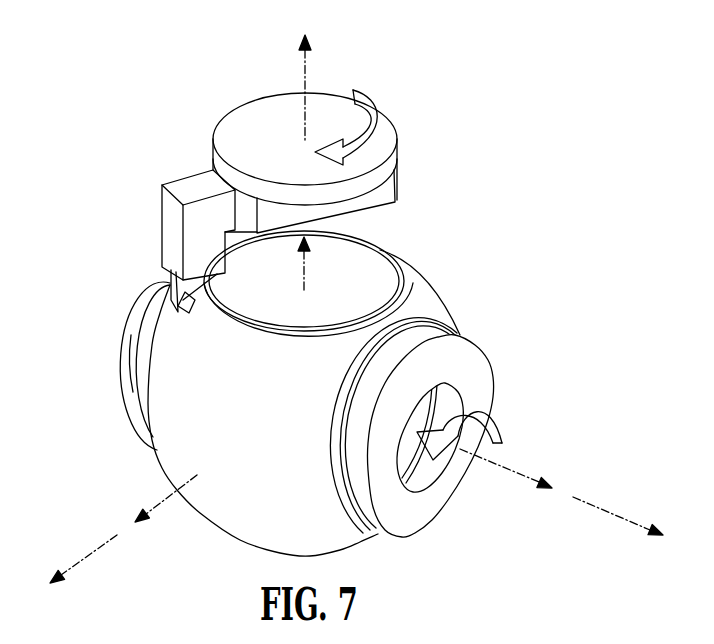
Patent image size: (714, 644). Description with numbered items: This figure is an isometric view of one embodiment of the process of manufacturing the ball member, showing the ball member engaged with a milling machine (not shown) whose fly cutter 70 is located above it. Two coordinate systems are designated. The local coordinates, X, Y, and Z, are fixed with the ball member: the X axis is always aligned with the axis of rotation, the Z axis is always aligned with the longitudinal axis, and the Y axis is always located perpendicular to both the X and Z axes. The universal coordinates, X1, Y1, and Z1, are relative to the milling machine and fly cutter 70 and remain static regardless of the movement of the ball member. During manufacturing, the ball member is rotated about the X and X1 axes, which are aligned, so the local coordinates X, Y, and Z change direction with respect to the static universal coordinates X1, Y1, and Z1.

The fly cutter 70 is at (183, 186).
The X axis X is at (507, 466).
The X1 axis X1 is at (621, 514).
The Y axis Y is at (164, 498).
The Y1 axis Y1 is at (75, 559).
The Z axis Z is at (313, 265).
The Z1 axis Z1 is at (319, 87).